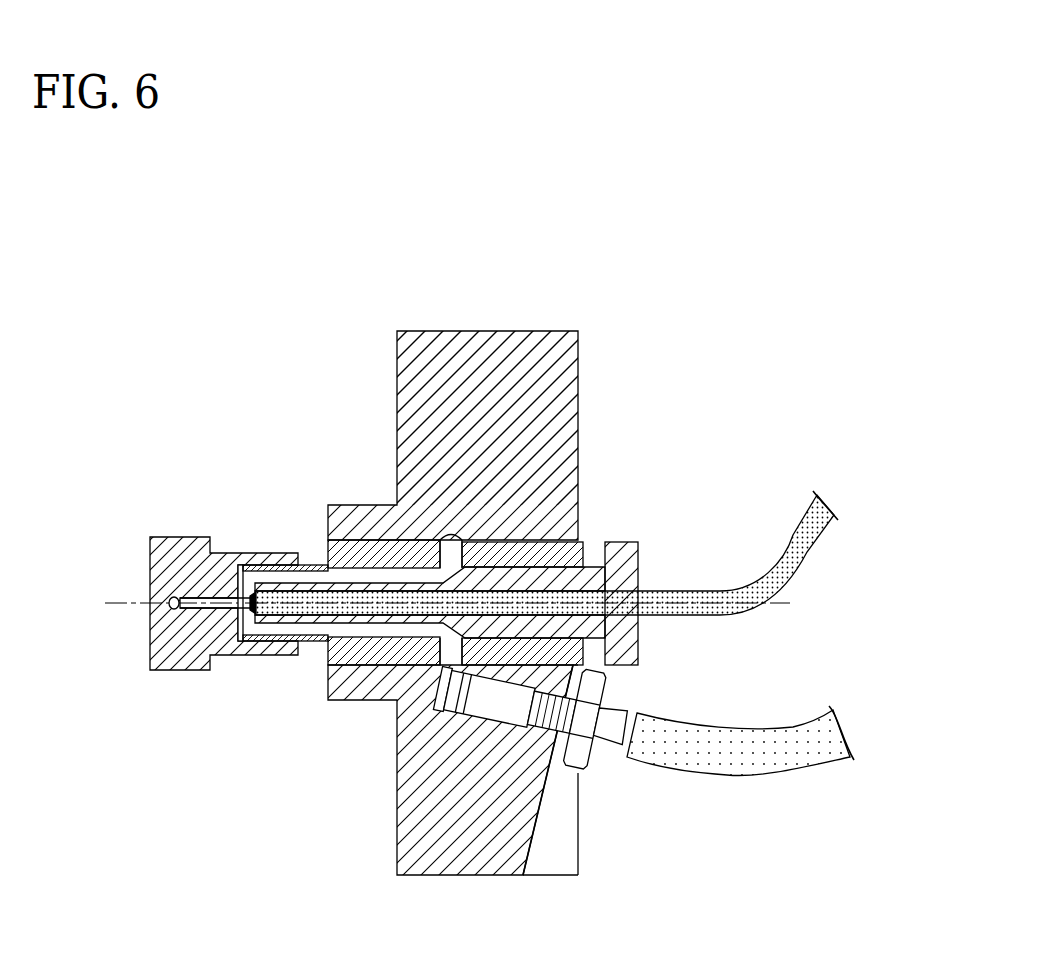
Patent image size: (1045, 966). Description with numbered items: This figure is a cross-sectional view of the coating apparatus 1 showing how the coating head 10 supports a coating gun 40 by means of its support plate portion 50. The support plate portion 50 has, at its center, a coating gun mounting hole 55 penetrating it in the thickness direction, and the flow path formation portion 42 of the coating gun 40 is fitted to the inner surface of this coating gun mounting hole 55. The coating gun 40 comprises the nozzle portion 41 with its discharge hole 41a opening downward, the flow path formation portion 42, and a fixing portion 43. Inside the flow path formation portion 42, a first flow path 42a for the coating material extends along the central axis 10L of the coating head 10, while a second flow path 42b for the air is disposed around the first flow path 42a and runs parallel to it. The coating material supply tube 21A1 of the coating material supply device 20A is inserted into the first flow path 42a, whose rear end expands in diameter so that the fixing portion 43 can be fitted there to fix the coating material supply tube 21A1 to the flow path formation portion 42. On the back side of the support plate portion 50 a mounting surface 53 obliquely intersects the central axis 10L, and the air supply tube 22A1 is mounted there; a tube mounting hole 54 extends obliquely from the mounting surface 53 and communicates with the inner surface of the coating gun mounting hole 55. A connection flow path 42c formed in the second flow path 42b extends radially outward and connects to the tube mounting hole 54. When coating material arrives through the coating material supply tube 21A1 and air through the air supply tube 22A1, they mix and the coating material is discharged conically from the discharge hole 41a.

The optical device 1 is at (138, 298).
The coating head 10 is at (380, 308).
The central axis 10L is at (130, 600).
The coating material supply device 20A is at (880, 575).
The coating material supply tube 21A1 is at (800, 567).
The air supply tube 22A1 is at (781, 730).
The coating gun 40 is at (150, 522).
The nozzle portion 41 is at (150, 548).
The discharge hole 41a is at (168, 600).
The flow path formation portion 42 is at (368, 548).
The first flow path 42a is at (262, 597).
The second flow path 42b is at (287, 573).
The connection flow path 42c is at (443, 645).
The fixing portion 43 is at (620, 545).
The support plate portion 50 is at (487, 366).
The mounting surface 53 is at (533, 833).
The tube mounting hole 54 is at (547, 700).
The coating gun mounting hole 55 is at (508, 553).